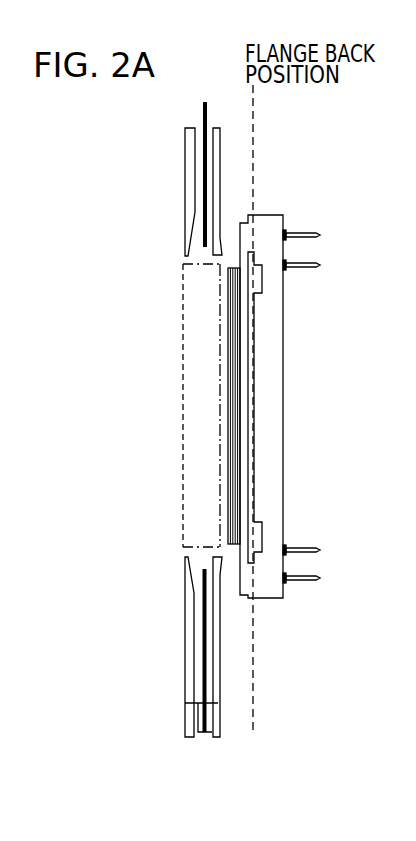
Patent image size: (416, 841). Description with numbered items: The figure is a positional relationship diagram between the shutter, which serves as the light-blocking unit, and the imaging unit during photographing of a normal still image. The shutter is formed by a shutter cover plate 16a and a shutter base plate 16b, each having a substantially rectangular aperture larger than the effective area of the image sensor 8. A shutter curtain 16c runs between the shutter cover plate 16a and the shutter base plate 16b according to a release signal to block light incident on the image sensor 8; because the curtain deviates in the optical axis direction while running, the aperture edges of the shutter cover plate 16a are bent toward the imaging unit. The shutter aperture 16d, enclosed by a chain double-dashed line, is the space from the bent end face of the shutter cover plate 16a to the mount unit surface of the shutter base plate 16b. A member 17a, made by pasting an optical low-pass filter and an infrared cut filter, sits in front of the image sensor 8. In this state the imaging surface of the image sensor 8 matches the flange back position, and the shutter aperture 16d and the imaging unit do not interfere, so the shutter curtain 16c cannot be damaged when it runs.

The image sensor 8 is at (268, 592).
The shutter cover plate 16a is at (220, 165).
The shutter base plate 16b is at (185, 182).
The shutter curtain 16c is at (207, 112).
The shutter aperture 16d is at (190, 523).
The member 17a is at (238, 510).